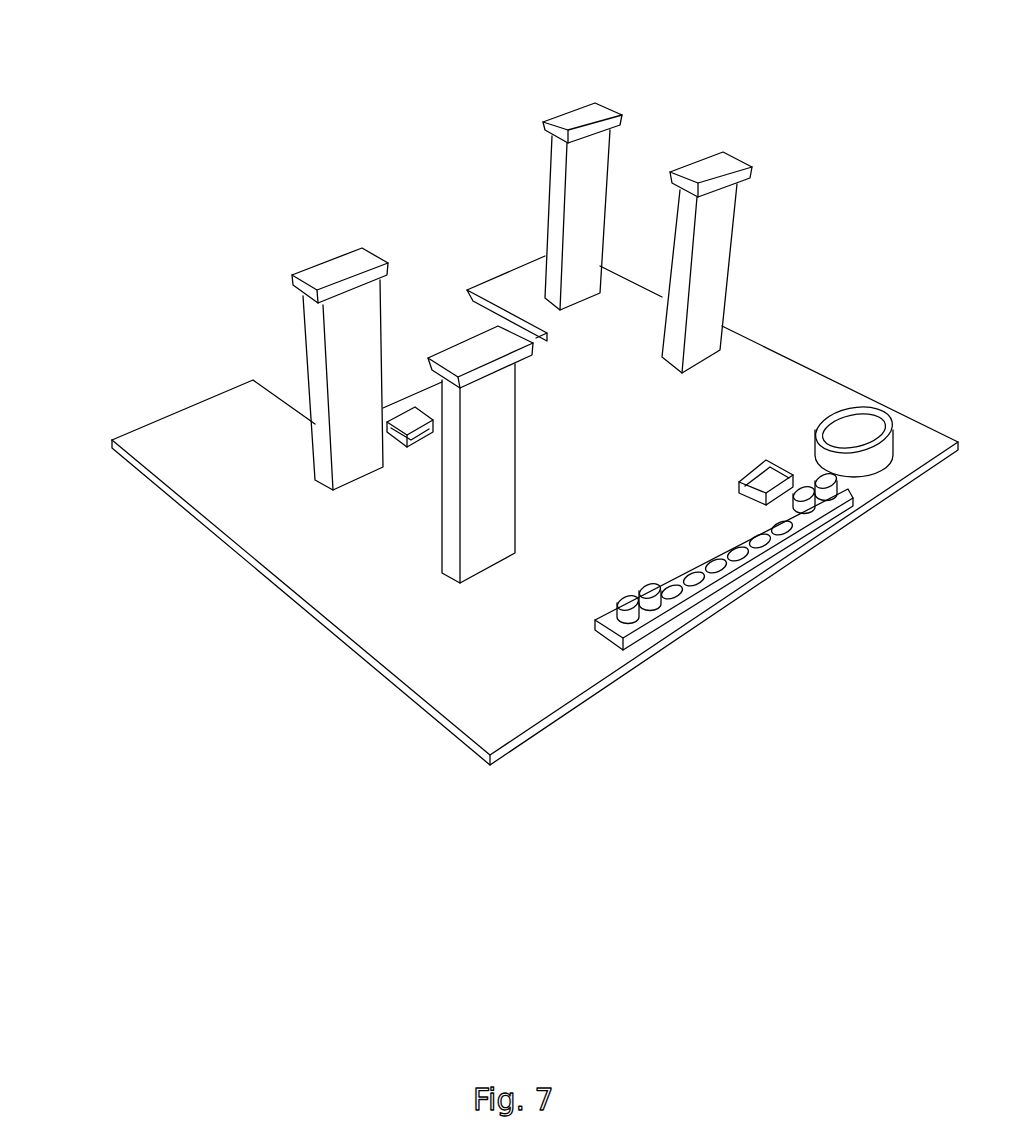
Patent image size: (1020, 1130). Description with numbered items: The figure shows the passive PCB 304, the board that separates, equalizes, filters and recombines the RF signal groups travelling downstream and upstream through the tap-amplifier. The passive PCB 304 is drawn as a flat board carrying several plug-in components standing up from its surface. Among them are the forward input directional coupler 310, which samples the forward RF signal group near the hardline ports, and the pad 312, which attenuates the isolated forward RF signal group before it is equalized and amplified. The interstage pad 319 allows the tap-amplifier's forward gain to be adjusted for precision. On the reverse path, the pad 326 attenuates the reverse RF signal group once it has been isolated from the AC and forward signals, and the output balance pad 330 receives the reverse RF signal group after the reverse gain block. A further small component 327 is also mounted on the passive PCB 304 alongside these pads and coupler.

The passive PCB 304 is at (184, 536).
The forward input directional coupler 310 is at (414, 406).
The pad 312 is at (335, 273).
The interstage pad 319 is at (700, 172).
The pad 326 is at (578, 113).
The connector block 327 is at (760, 468).
The output balance pad 330 is at (446, 507).